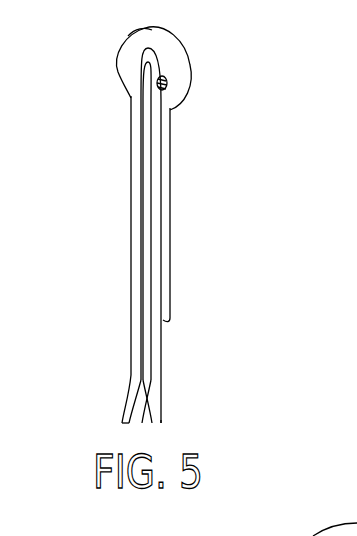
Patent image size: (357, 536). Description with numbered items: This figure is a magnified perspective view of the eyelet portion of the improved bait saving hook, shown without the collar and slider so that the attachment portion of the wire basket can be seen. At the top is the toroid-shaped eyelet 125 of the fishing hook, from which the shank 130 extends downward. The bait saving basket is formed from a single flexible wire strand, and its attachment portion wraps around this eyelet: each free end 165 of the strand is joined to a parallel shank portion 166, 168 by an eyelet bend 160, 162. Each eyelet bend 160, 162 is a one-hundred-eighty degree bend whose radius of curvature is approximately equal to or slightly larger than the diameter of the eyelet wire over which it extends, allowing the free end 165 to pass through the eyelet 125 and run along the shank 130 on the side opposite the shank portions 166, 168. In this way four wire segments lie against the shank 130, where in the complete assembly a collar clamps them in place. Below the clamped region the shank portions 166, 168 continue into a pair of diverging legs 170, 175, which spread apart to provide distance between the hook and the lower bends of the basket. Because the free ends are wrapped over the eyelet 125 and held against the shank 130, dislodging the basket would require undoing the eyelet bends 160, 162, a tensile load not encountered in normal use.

The eyelet 125 is at (132, 40).
The shank 130 is at (163, 345).
The eyelet bend 160 is at (140, 62).
The eyelet bend 162 is at (140, 62).
The free end 165 is at (170, 272).
The shank portion 166 is at (143, 203).
The shank portion 168 is at (129, 198).
The diverging leg 170 is at (163, 380).
The diverging leg 175 is at (127, 390).